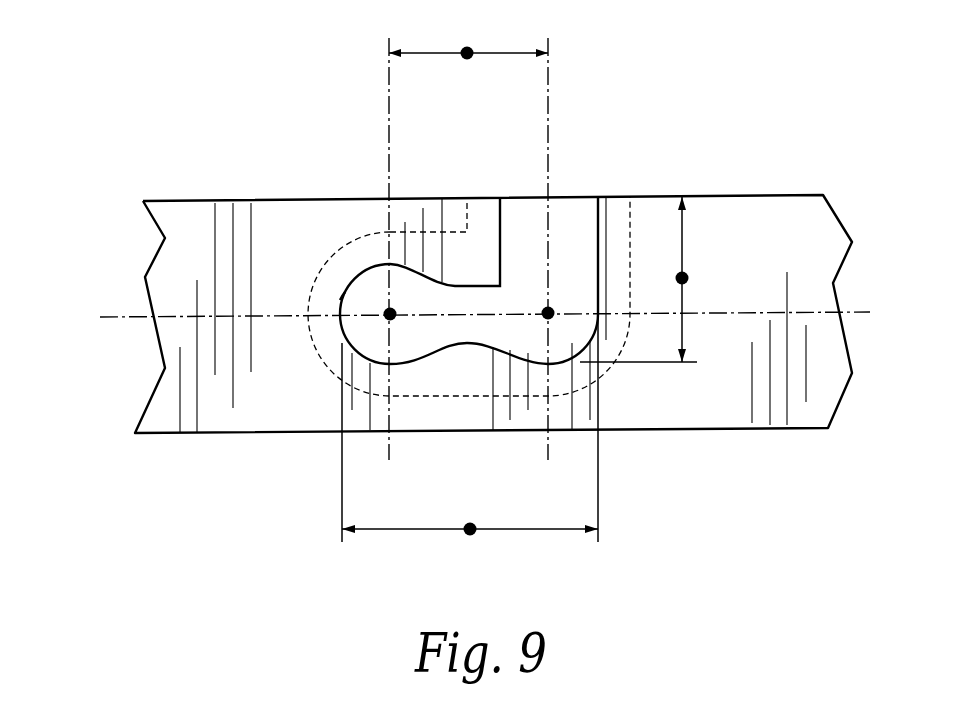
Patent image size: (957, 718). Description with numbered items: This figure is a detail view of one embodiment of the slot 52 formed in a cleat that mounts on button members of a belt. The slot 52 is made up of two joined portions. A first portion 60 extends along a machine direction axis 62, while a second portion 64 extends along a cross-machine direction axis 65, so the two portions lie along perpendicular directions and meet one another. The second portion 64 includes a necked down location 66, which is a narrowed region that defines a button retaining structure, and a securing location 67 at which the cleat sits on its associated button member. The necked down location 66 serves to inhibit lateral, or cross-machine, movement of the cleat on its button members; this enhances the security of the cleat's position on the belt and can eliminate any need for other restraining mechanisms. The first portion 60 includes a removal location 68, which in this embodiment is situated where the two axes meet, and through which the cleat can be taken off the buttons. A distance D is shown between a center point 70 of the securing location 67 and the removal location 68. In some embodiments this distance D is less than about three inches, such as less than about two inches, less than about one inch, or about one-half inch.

The slot 52 is at (336, 331).
The first portion 60 is at (682, 278).
The machine direction axis 62 is at (548, 97).
The second portion 64 is at (470, 529).
The cross-machine direction axis 65 is at (122, 318).
The necked down location 66 is at (473, 344).
The securing location 67 is at (350, 303).
The removal location 68 is at (548, 313).
The center point 70 is at (390, 314).
The distance D is at (467, 53).